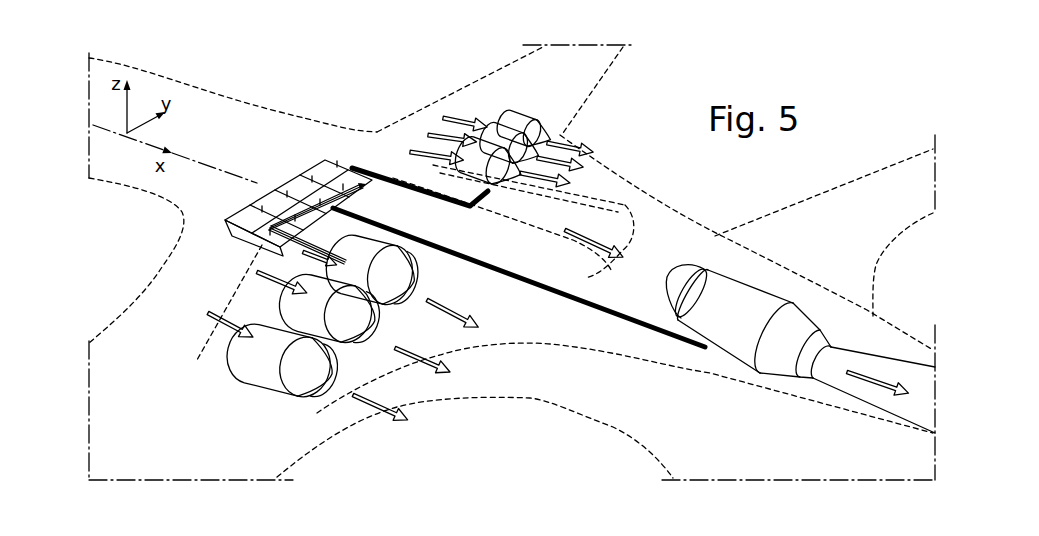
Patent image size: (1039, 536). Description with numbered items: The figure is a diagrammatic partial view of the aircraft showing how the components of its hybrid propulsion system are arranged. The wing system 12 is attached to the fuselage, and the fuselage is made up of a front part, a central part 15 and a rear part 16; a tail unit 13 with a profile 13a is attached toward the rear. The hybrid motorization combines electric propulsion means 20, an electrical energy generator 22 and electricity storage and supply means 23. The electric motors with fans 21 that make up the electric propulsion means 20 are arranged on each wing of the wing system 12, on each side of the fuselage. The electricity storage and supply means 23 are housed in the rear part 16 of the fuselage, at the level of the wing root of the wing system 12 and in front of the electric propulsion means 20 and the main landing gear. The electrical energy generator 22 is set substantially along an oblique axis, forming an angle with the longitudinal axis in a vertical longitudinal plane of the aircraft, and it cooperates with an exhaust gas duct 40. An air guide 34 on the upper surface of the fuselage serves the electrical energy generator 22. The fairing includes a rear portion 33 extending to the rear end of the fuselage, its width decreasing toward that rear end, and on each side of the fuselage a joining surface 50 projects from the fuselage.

The wing system 12 is at (589, 58).
The tail unit 13 is at (862, 183).
The profile 13a is at (874, 272).
The central part 15 is at (308, 104).
The rear part 16 is at (622, 158).
The electric propulsion means 20 is at (548, 128).
The electric motors with fans 21 is at (538, 140).
The electrical energy generator 22 is at (751, 343).
The electricity storage and supply means 23 is at (294, 185).
The rear portion 33 is at (707, 232).
The air guide 34 is at (570, 268).
The exhaust gas duct 40 is at (914, 410).
The joining surface 50 is at (563, 393).